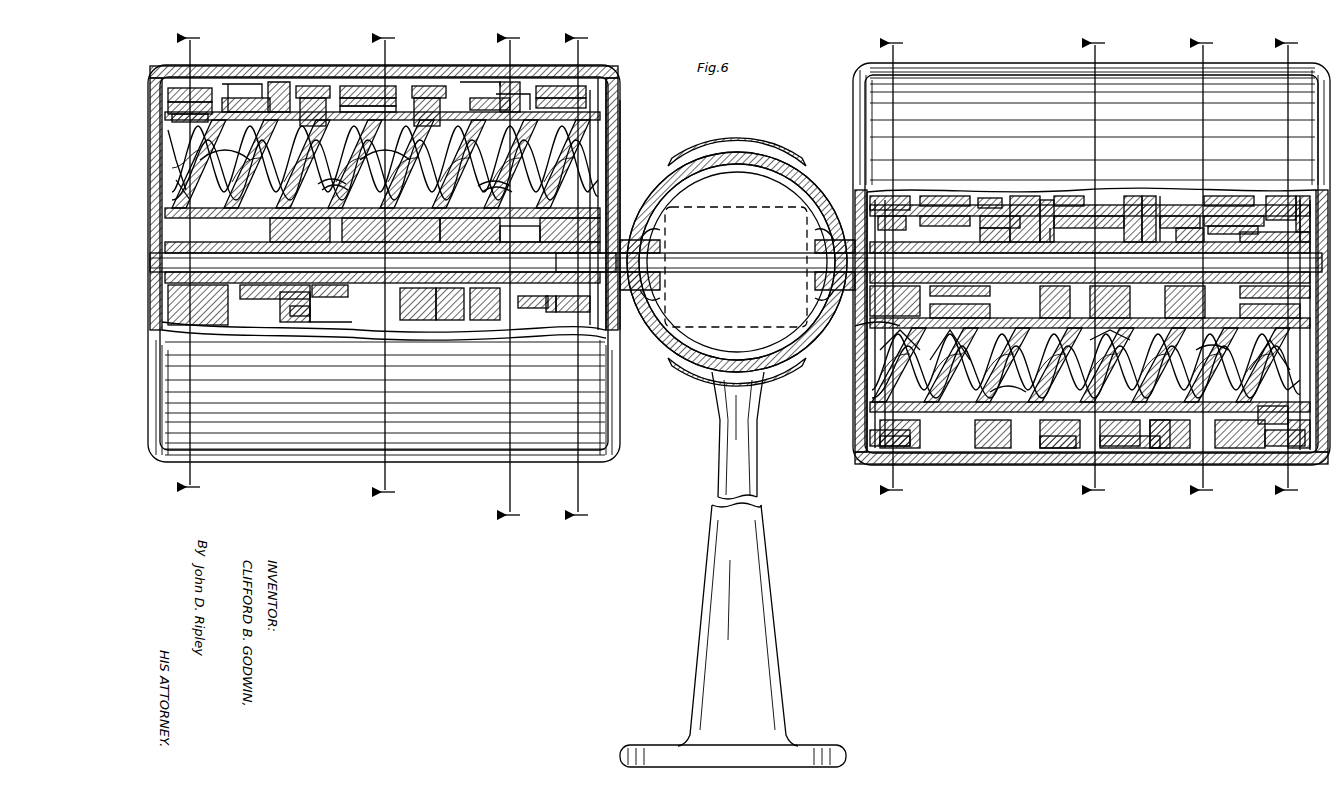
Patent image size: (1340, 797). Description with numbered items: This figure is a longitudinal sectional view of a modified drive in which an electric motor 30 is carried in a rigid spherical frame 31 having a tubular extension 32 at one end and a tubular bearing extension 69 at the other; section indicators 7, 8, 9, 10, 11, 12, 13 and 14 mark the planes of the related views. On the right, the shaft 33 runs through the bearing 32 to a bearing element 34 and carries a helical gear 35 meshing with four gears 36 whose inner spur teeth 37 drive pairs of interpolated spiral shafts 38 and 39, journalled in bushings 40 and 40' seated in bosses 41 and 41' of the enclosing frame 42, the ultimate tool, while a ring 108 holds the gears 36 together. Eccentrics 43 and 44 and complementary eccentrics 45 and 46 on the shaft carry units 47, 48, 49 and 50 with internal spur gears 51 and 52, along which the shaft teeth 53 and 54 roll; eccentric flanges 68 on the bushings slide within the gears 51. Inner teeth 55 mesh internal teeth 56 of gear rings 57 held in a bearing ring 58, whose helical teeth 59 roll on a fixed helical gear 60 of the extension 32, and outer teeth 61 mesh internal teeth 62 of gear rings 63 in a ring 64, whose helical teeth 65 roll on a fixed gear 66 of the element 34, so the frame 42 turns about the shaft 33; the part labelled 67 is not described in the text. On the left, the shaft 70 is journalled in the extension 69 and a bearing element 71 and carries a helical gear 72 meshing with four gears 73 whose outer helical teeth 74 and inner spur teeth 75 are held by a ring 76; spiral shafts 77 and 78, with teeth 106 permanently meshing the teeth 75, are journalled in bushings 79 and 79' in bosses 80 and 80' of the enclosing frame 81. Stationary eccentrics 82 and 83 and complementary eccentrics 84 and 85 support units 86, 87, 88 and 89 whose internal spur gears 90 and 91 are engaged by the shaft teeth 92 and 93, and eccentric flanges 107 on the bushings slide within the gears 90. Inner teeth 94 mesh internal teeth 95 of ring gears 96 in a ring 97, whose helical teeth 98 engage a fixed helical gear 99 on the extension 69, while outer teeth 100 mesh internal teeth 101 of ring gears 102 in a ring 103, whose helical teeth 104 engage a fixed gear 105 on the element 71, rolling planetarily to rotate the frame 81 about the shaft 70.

The section line 7- 7 is at (1292, 267).
The section line 8- 8 is at (1207, 267).
The bearing 9 is at (1099, 267).
The bearing 10 is at (902, 267).
The bushing 11 is at (584, 40).
The section line 12- 12 is at (516, 271).
The section line 13- 13 is at (490, 276).
The section line 14- 14 is at (196, 262).
The electric motor 30 is at (826, 198).
The rigid spherical frame 31 is at (672, 348).
The tubular extension 32 is at (932, 248).
The shaft 33 is at (840, 300).
The bearing element 34 is at (1232, 216).
The helical gear 35 is at (1084, 216).
The gear 36 is at (1130, 452).
The spur gear teeth 37 is at (1136, 196).
The spiral shaft 38 is at (870, 368).
The spiral shaft 39 is at (868, 346).
The bushing 40 is at (1071, 267).
The bushing 40' is at (1228, 186).
The boss 41 is at (925, 310).
The boss 41' is at (1239, 308).
The enclosing frame 42 is at (1146, 64).
The cylindrical eccentric 43 is at (998, 216).
The cylindrical eccentric 44 is at (1182, 216).
The complementary cylindrical eccentric 45 is at (995, 247).
The complementary cylindrical eccentric 46 is at (1185, 273).
The unit 47 is at (988, 198).
The unit 48 is at (1166, 198).
The unit 49 is at (1044, 200).
The unit 50 is at (1152, 200).
The internal spur gear 51 is at (1020, 196).
The internal spur gear 52 is at (1062, 196).
The spur gear teeth 53 is at (1109, 362).
The spur gear teeth 54 is at (1090, 365).
The spur gear teeth 55 is at (902, 196).
The internal teeth 56 is at (866, 390).
The gear ring 57 is at (878, 210).
The bearing ring 58 is at (900, 450).
The external helical gear teeth 59 is at (862, 436).
The fixed helical gear 60 is at (960, 291).
The spur gear teeth 61 is at (1304, 196).
The internal spur teeth 62 is at (1278, 196).
The gear ring 63 is at (1258, 284).
The ring 64 is at (1292, 450).
The external helical gear teeth 65 is at (1270, 450).
The fixed helical gear 66 is at (1298, 196).
The gear tooth 67 is at (1058, 228).
The eccentric flange 68 is at (1112, 305).
The tubular bearing extension 69 is at (626, 238).
The shaft 70 is at (660, 263).
The rigid bearing element 71 is at (258, 300).
The helical gear 72 is at (420, 300).
The gear 73 is at (398, 106).
The external helical teeth 74 is at (362, 86).
The spur gear teeth 75 is at (380, 98).
The ring 76 is at (470, 82).
The spiral shaft 77 is at (173, 159).
The spiral shaft 78 is at (562, 339).
The bushing 79 is at (525, 229).
The bushing 79' is at (242, 86).
The boss 80 is at (513, 204).
The boss 80' is at (246, 79).
The enclosing frame 81 is at (612, 70).
The cylindrical eccentric 82 is at (490, 206).
The cylindrical eccentric 83 is at (333, 176).
The complementary cylindrical eccentric 84 is at (452, 322).
The complementary cylindrical eccentric 85 is at (300, 318).
The unit 86 is at (486, 322).
The unit 87 is at (282, 318).
The unit 88 is at (432, 320).
The unit 89 is at (314, 324).
The internal spur gear 90 is at (310, 86).
The internal spur gear 91 is at (455, 100).
The spur gear teeth 92 is at (480, 210).
The spur gear teeth 93 is at (385, 164).
The spur gear teeth 94 is at (612, 140).
The internal teeth 95 is at (562, 86).
The ring gear 96 is at (612, 92).
The ring 97 is at (612, 82).
The external helical gear teeth 98 is at (576, 98).
The fixed helical gear 99 is at (556, 250).
The spur gear teeth 100 is at (232, 162).
The internal gear teeth 101 is at (194, 116).
The ring gear 102 is at (235, 84).
The ring 103 is at (188, 86).
The external helical gear teeth 104 is at (170, 88).
The fixed gear 105 is at (214, 226).
The spur gear teeth 106 is at (386, 160).
The eccentric flange 107 is at (278, 82).
The ring 108 is at (1112, 450).